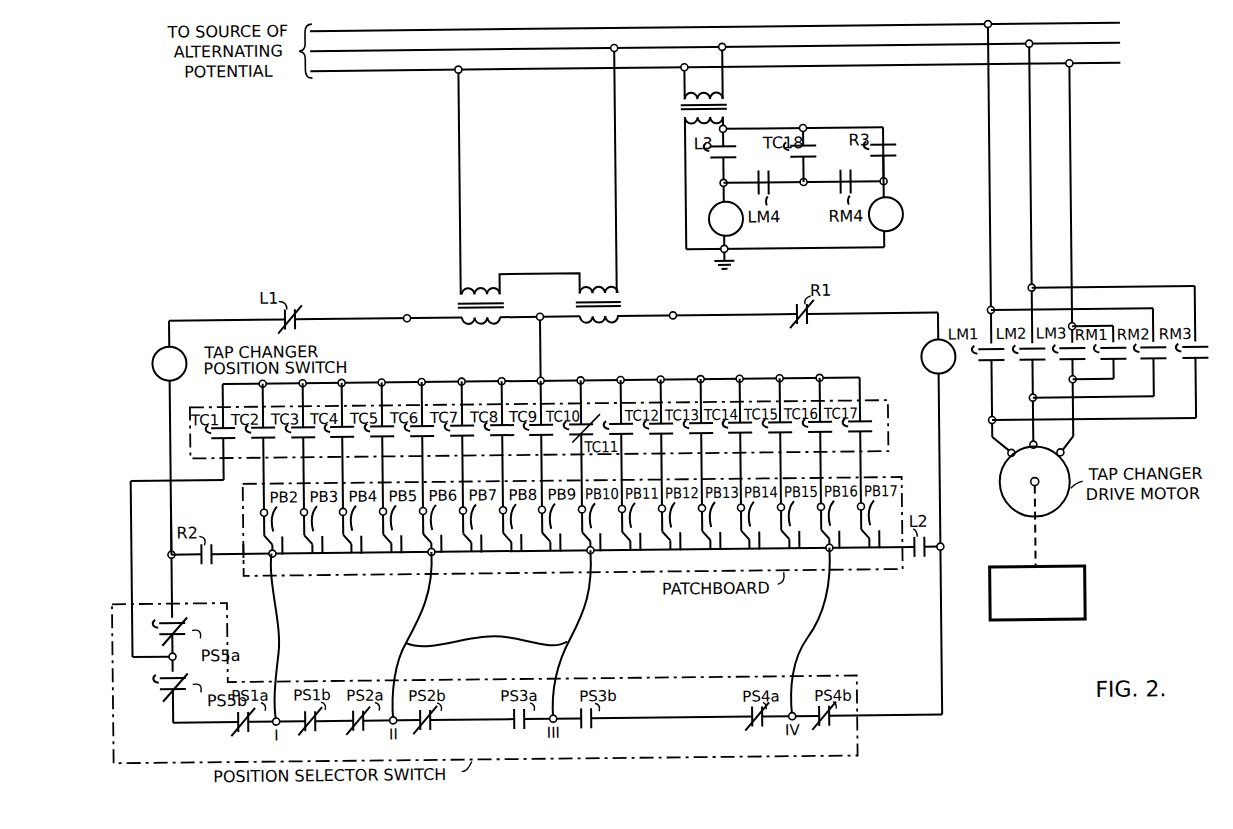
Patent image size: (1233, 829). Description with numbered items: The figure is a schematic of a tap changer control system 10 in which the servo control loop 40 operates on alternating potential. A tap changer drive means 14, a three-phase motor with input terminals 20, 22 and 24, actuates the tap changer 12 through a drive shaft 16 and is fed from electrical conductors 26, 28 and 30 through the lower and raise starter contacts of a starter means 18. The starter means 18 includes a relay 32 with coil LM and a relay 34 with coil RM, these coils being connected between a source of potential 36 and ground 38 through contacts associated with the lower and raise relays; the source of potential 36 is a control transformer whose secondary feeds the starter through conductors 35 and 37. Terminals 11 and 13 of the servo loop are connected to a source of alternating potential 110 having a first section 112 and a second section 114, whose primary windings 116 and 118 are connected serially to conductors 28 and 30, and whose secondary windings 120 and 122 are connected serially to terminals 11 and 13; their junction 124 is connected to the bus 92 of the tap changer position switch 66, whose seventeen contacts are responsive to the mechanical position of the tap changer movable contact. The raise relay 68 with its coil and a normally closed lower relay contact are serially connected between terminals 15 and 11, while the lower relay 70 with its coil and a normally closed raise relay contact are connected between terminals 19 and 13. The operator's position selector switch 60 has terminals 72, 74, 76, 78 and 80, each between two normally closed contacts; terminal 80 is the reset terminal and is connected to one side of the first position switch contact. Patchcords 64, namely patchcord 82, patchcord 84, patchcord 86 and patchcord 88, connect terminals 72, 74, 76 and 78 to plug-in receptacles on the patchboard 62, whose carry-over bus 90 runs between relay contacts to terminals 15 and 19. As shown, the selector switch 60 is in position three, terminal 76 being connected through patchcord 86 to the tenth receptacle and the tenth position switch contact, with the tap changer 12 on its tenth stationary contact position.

The electrical conductor 26 is at (924, 31).
The electrical conductor 28 is at (924, 51).
The electrical conductor 30 is at (924, 71).
The source of potential 36 is at (655, 110).
The conductor 35 is at (727, 120).
The conductor 37 is at (685, 132).
The relay 32 is at (717, 202).
The relay 34 is at (897, 200).
The ground 38 is at (738, 265).
The starter means 18 is at (797, 245).
The primary winding 116 is at (476, 290).
The primary winding 118 is at (594, 290).
The source of alternating potential 110 is at (528, 291).
The first section 112 is at (428, 307).
The second section 114 is at (621, 307).
The junction 124 is at (540, 314).
The secondary winding 120 is at (492, 323).
The secondary winding 122 is at (595, 323).
The servo control loop 40 is at (536, 319).
The terminal 11 is at (406, 314).
The terminal 13 is at (674, 313).
The raise relay 68 is at (153, 358).
The lower relay 70 is at (922, 358).
The tap changer position switch 66 is at (215, 395).
The bus 92 is at (401, 379).
The terminal 15 is at (158, 530).
The carry-over bus 90 is at (215, 532).
The patchboard 62 is at (646, 574).
The patchcords 64 is at (502, 636).
The patchcord 82 is at (277, 608).
The patchcord 84 is at (400, 626).
The patchcord 86 is at (584, 609).
The patchcord 88 is at (830, 608).
The terminal 72 is at (272, 715).
The terminal 74 is at (392, 715).
The terminal 76 is at (552, 715).
The terminal 78 is at (791, 715).
The terminal 80 is at (184, 662).
The operator's position selector switch 60 is at (178, 762).
The control circuit 10' 10 is at (961, 703).
The input terminal 20 is at (1006, 457).
The input terminal 22 is at (1030, 450).
The input terminal 24 is at (1064, 457).
The tap changer drive means 14 is at (1004, 507).
The drive shaft 16 is at (1034, 538).
The tap changer 12 is at (1018, 571).
The terminal 19 is at (946, 557).